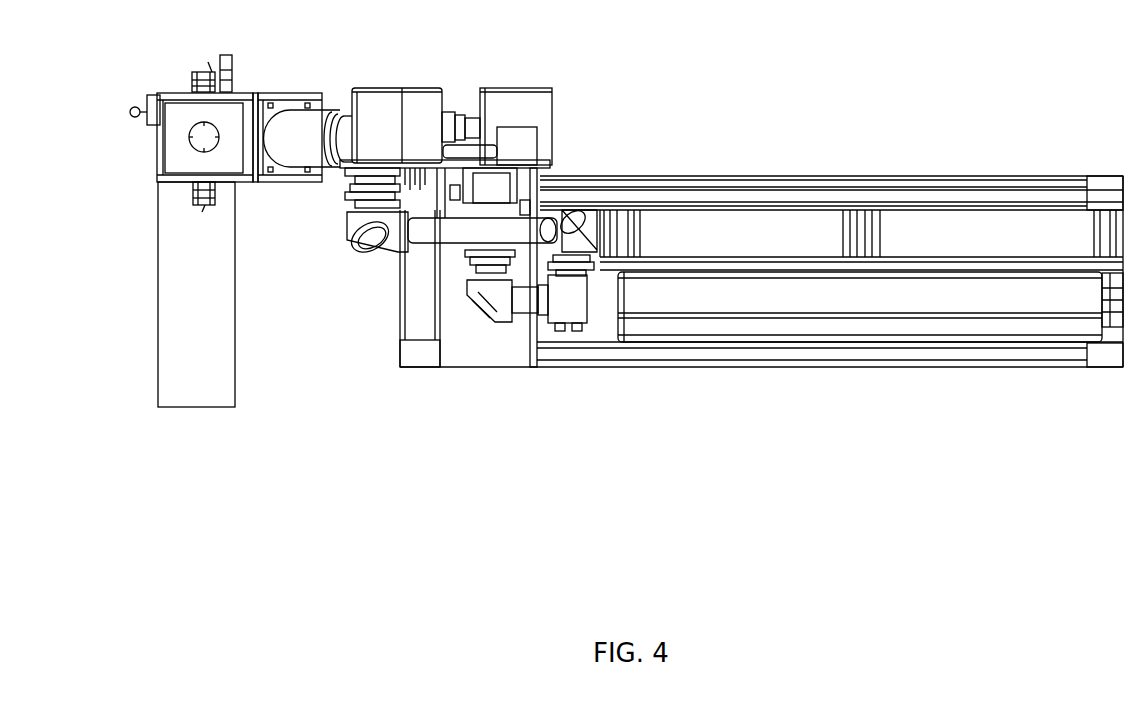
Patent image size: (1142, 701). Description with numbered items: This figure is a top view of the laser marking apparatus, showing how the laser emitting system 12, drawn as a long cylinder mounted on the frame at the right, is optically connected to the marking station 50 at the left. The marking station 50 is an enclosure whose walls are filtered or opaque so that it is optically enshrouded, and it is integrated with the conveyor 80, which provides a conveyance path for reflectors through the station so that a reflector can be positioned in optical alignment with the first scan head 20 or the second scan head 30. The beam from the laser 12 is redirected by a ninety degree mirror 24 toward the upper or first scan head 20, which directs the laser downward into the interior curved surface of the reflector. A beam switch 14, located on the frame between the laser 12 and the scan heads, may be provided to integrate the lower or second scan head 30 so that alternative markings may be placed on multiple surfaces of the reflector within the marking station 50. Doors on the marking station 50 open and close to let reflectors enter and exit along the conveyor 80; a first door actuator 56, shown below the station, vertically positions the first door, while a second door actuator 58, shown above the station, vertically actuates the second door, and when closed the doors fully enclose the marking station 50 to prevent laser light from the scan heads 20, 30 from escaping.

The laser emitting system 12 is at (957, 335).
The beam switch 14 is at (572, 308).
The first scan head 20 is at (425, 98).
The 90° mirror 24 is at (360, 248).
The second scan head 30 is at (542, 115).
The marking station 50 is at (125, 130).
The first door actuator 56 is at (187, 192).
The second door actuator 58 is at (193, 77).
The conveyor 80 is at (177, 340).